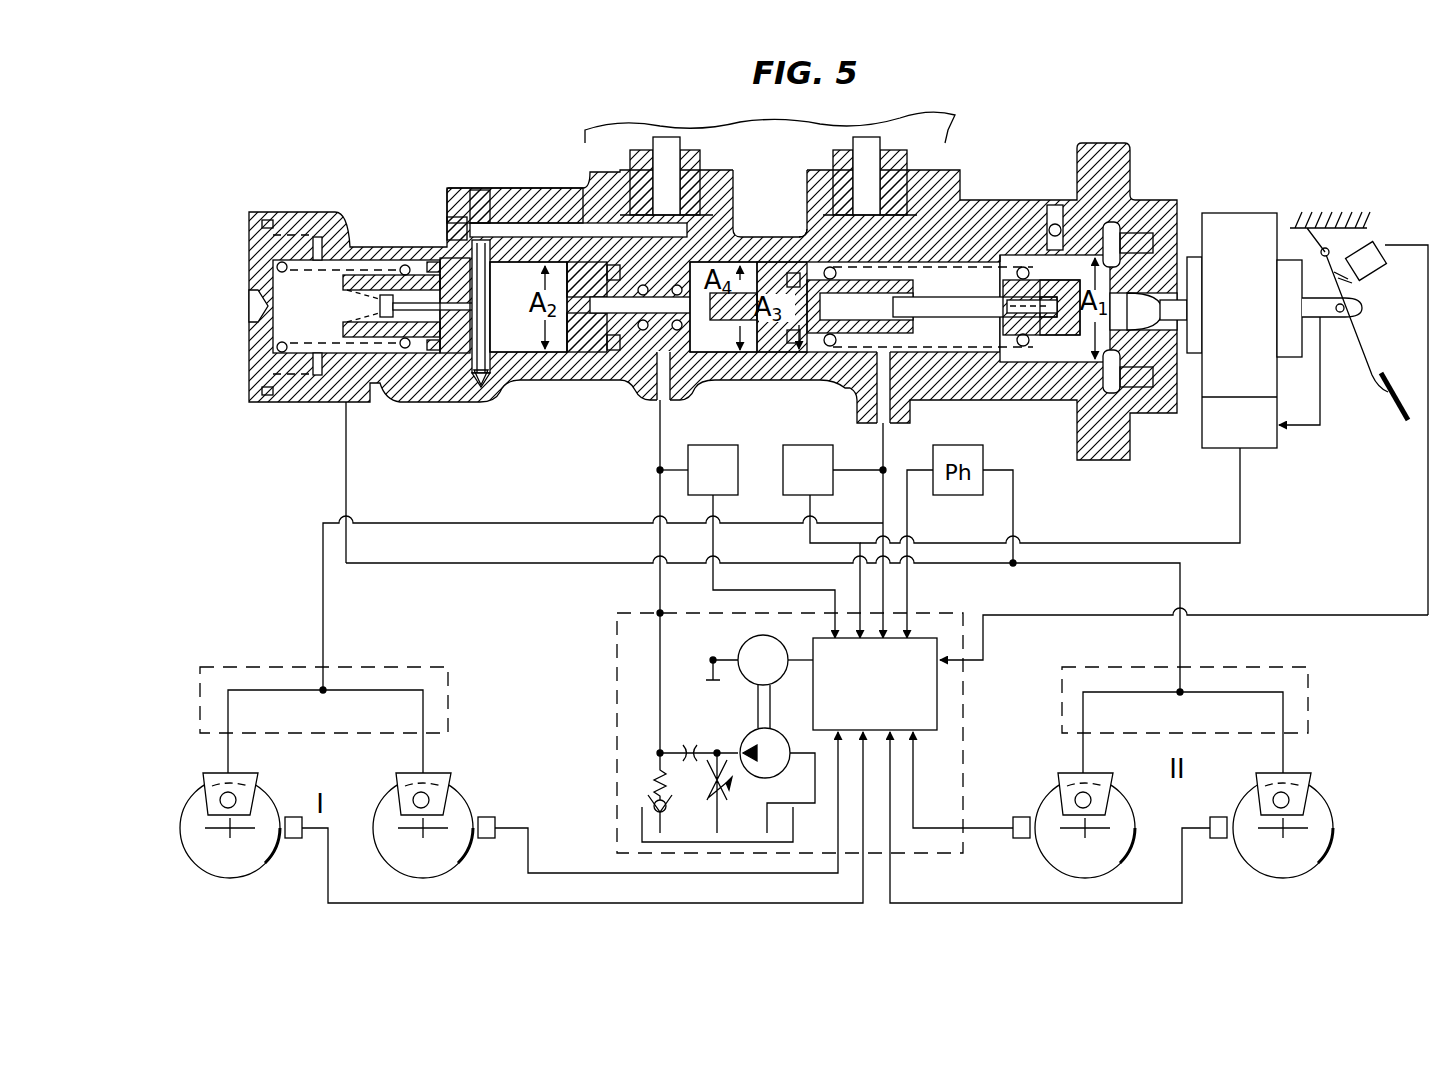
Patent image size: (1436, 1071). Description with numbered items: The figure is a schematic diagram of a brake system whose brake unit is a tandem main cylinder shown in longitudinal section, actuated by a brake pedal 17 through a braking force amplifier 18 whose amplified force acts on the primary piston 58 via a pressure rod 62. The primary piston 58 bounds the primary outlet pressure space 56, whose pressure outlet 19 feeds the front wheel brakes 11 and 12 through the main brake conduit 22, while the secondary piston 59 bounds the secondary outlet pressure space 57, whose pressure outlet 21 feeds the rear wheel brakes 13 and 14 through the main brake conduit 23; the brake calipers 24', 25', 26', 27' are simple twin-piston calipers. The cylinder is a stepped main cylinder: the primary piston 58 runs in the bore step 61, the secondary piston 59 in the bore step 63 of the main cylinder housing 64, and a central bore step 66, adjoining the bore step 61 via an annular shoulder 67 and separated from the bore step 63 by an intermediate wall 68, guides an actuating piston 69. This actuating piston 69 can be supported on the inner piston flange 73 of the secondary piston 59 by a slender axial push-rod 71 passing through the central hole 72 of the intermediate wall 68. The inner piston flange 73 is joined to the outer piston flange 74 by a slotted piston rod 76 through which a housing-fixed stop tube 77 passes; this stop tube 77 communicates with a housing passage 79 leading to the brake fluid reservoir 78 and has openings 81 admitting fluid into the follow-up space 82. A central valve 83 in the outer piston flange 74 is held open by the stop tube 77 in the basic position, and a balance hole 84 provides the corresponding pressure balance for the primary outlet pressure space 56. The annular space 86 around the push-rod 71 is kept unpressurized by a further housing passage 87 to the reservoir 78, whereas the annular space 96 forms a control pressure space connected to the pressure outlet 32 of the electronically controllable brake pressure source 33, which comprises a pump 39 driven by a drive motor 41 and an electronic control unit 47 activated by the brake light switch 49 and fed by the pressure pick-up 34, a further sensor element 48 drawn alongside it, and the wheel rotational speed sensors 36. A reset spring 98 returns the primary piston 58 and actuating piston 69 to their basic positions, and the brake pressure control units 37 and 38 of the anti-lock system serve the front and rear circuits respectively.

The front wheel brake 11 is at (195, 855).
The front wheel brake 12 is at (390, 855).
The rear wheel brake 13 is at (1051, 855).
The rear wheel brake 14 is at (1248, 855).
The brake pedal 17 is at (1390, 378).
The braking force amplifier 18 is at (1246, 233).
The pressure outlet 19 is at (885, 425).
The pressure outlet 21 is at (345, 405).
The main brake conduit 22 is at (452, 523).
The main brake conduit 23 is at (345, 490).
The brake caliper 24' is at (199, 784).
The brake caliper 25' is at (392, 784).
The brake caliper 26' is at (1053, 784).
The brake caliper 27' is at (1250, 784).
The pressure outlet 32 is at (660, 617).
The electronically controllable brake pressure source 33 is at (922, 613).
The pressure pick-up 34 is at (825, 495).
The wheel rotational speed sensor 36 is at (293, 840).
The hydraulic brake pressure control unit 37 is at (435, 667).
The hydraulic brake pressure control unit 38 is at (1300, 667).
The pump 39 is at (740, 743).
The drive motor 41 is at (742, 650).
The electronic control unit 47 is at (813, 683).
The pedal travel sensor 48 is at (730, 495).
The brake light switch 49 is at (1383, 257).
The primary outlet pressure space 56 is at (1000, 347).
The secondary outlet pressure space 57 is at (287, 330).
The primary piston 58 is at (1043, 330).
The secondary piston 59 is at (425, 345).
The bore step 61 is at (960, 335).
The pressure rod 62 is at (1167, 300).
The bore step 63 is at (505, 352).
The main cylinder housing 64 is at (529, 203).
The central bore step 66 is at (737, 322).
The annular shoulder 67 is at (845, 352).
The intermediate wall 68 is at (703, 355).
The actuating piston 69 is at (793, 352).
The axial push-rod 71 is at (723, 250).
The central hole 72 is at (677, 310).
The inner piston flange 73 is at (582, 340).
The outer piston flange 74 is at (447, 243).
The slotted piston rod 76 is at (527, 330).
The stop tube 77 is at (480, 390).
The brake fluid reservoir 78 is at (933, 132).
The housing passage 79 is at (497, 223).
The openings 81 is at (490, 288).
The follow-up space 82 is at (553, 262).
The central valve 83 is at (368, 305).
The balance hole 84 is at (1050, 247).
The annular space 86 is at (750, 352).
The housing passage 87 is at (733, 210).
The annular space 96 is at (642, 350).
The reset spring 98 is at (893, 342).